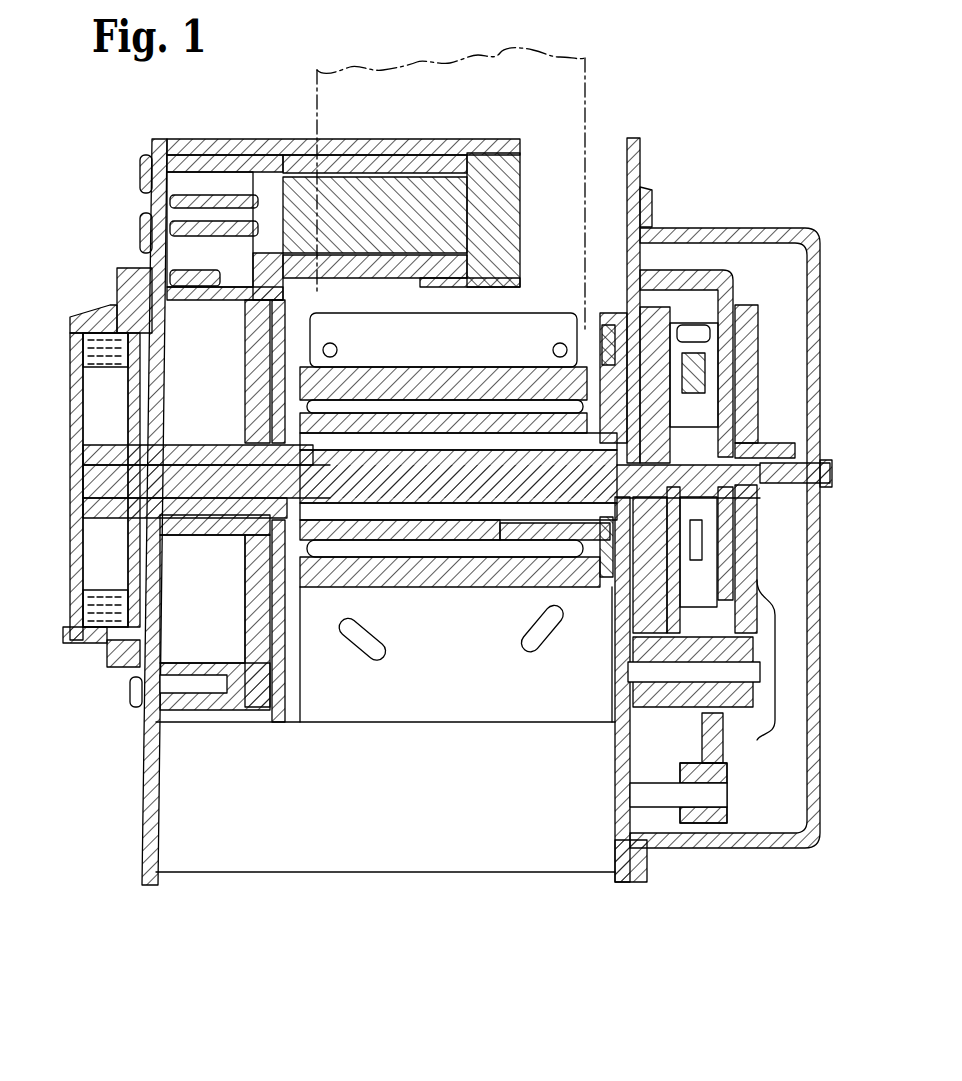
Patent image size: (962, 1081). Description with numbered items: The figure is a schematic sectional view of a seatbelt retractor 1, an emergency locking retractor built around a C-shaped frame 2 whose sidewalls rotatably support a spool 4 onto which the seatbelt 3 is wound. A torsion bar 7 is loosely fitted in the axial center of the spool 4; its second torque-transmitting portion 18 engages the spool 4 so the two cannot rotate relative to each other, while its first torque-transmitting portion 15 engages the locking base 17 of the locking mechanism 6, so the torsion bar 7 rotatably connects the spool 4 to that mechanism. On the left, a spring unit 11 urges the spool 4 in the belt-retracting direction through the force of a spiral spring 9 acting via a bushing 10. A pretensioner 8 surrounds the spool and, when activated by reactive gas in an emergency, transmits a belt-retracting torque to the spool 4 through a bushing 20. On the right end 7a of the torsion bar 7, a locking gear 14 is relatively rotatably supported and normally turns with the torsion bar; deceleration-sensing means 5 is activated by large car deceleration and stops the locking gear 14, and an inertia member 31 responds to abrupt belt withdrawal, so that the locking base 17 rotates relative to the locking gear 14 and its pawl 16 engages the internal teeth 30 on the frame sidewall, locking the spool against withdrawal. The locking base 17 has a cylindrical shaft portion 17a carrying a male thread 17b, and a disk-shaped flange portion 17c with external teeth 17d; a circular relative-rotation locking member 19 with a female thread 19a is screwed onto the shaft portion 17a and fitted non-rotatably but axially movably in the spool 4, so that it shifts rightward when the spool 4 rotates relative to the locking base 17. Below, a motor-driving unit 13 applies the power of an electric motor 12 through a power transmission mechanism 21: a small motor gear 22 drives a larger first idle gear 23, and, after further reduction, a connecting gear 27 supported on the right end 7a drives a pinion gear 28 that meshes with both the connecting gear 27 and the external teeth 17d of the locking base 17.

The seatbelt retractor 1 is at (661, 174).
The C-shaped frame 2 is at (458, 700).
The seatbelt 3 is at (590, 132).
The spool 4 is at (545, 378).
The deceleration-sensing means 5 is at (766, 727).
The locking mechanism 6 is at (699, 293).
The torsion bar 7 is at (406, 453).
The right end of the torsion bar 7a is at (770, 450).
The pretensioner 8 is at (540, 218).
The spiral spring 9 is at (85, 383).
The bushing 10 is at (85, 540).
The spring unit 11 is at (64, 620).
The electric motor 12 is at (428, 852).
The motor-driving unit 13 is at (661, 818).
The locking gear 14 is at (732, 300).
The first torque-transmitting portion 15 is at (565, 600).
The pawl 16 is at (590, 598).
The locking base 17 is at (620, 380).
The shaft portion 17a is at (560, 523).
The male thread 17b is at (500, 530).
The flange portion 17c is at (608, 640).
The external teeth 17d is at (662, 297).
The second torque-transmitting portion 18 is at (330, 548).
The relative-rotation locking member 19 is at (530, 398).
The female thread 19a is at (480, 400).
The bushing 20 is at (340, 445).
The power transmission mechanism 21 is at (748, 788).
The motor gear 22 is at (712, 822).
The first idle gear 23 is at (702, 745).
The connecting gear 27 is at (755, 330).
The pinion gear 28 is at (755, 680).
The internal teeth 30 is at (745, 565).
The inertia member 31 is at (700, 378).